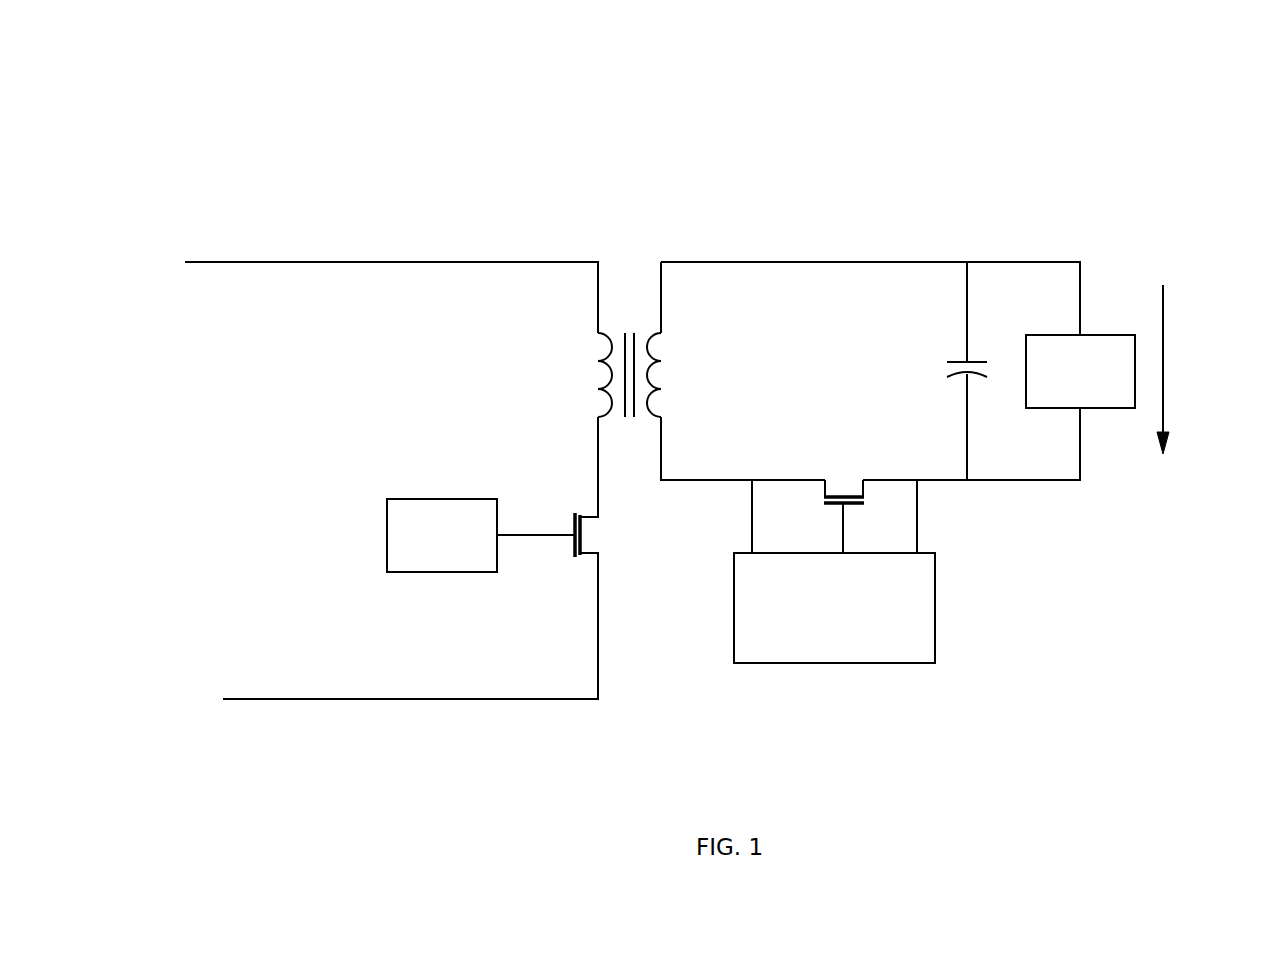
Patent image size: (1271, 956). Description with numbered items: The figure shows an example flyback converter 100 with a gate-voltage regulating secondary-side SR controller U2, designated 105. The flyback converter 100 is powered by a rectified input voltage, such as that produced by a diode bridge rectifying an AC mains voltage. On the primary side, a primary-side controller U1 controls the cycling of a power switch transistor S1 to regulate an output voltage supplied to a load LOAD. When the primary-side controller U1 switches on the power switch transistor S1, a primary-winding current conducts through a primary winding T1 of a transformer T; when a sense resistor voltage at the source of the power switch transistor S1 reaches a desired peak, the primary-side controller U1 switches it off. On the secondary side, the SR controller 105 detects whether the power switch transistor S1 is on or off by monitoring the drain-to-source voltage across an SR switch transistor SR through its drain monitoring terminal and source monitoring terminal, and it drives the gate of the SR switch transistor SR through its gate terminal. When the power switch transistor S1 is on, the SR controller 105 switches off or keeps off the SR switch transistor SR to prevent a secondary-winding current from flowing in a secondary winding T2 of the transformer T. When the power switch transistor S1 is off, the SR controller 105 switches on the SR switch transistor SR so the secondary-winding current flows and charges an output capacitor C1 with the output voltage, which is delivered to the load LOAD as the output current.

The flyback converter 100 is at (580, 107).
The secondary-side SR controller 105 is at (935, 607).
The transformer T is at (626, 332).
The primary winding T1 is at (581, 375).
The secondary winding T2 is at (674, 375).
The power switch transistor S1 is at (603, 535).
The primary-side controller U1 is at (442, 535).
The SR switch transistor SR is at (844, 476).
The output capacitor C1 is at (955, 351).
The load LOAD is at (1080, 371).
The secondary-side SR controller U2 is at (834, 608).